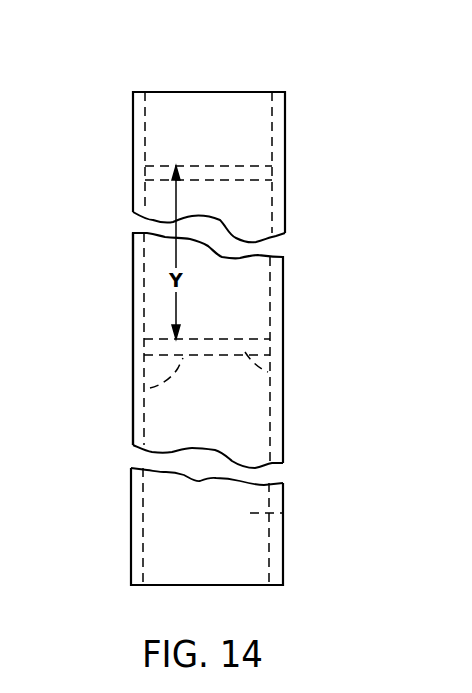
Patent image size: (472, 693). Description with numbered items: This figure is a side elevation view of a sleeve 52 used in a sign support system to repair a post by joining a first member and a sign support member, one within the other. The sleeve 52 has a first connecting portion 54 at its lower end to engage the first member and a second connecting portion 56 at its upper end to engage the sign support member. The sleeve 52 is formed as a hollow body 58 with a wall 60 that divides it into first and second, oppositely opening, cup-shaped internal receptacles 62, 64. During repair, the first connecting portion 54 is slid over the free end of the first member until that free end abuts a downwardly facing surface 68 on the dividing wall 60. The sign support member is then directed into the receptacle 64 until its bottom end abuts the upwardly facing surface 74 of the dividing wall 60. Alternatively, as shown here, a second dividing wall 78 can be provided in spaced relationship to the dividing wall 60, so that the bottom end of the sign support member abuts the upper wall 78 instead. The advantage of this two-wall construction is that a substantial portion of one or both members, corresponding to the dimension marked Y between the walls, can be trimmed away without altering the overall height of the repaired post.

The sleeve 52 is at (265, 316).
The first connecting portion 54 is at (283, 556).
The second connecting portion 56 is at (285, 127).
The hollow body 58 is at (133, 305).
The wall 60 is at (283, 372).
The first internal receptacle 62 is at (283, 513).
The second internal receptacle 64 is at (260, 217).
The downwardly facing surface 68 is at (150, 388).
The upwardly facing surface 74 is at (238, 340).
The second dividing wall 78 is at (196, 166).